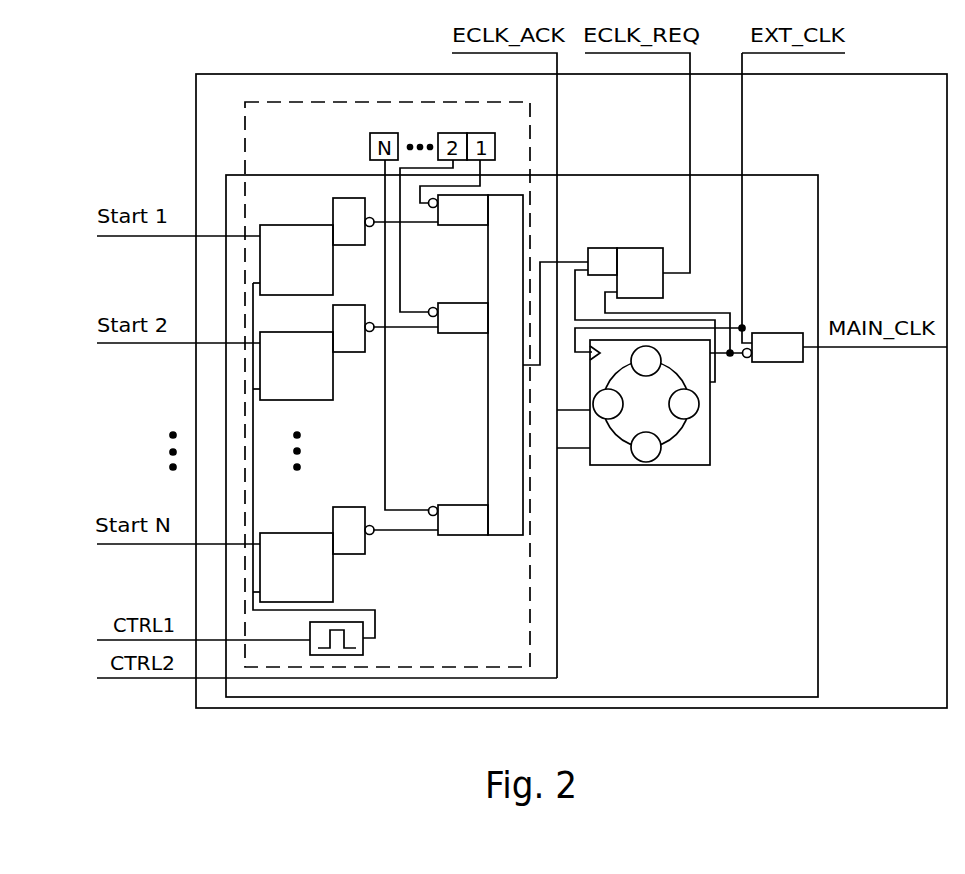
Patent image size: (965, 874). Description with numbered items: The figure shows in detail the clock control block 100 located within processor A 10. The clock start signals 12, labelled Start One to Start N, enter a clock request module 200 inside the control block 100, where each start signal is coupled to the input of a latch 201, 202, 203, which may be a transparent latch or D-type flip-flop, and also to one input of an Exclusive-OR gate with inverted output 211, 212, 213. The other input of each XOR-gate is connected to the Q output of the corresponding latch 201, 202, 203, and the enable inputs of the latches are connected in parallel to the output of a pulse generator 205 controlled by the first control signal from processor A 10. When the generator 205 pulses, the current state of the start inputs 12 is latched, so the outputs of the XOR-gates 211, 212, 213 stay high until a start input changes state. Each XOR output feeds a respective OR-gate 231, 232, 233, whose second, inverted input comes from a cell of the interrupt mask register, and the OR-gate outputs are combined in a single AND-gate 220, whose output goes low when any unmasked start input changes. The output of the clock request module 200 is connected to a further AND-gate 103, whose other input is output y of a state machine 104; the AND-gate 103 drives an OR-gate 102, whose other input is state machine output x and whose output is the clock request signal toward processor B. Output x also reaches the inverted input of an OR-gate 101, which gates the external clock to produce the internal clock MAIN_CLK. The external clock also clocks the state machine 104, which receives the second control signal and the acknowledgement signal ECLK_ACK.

The processor A 10 is at (890, 709).
The clock start signals 12 is at (152, 545).
The clock control block 100 is at (735, 698).
The OR-gate 101 is at (810, 363).
The OR-gate 102 is at (622, 248).
The AND-gate 103 is at (605, 248).
The state machine 104 is at (675, 466).
The clock request module 200 is at (460, 668).
The latch 201 is at (318, 225).
The latch 202 is at (318, 332).
The latch 203 is at (318, 533).
The pulse generator 205 is at (340, 656).
The Exclusive-OR gate with inverted output 211 is at (347, 198).
The Exclusive-OR gate with inverted output 212 is at (345, 353).
The Exclusive-OR gate with inverted output 213 is at (347, 507).
The AND-gate 220 is at (505, 536).
The OR-gate 231 is at (470, 226).
The OR-gate 232 is at (470, 334).
The OR-gate 233 is at (470, 536).